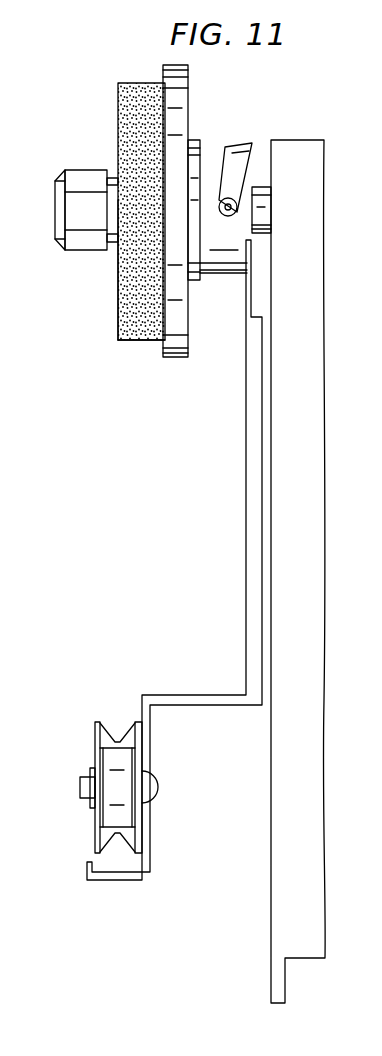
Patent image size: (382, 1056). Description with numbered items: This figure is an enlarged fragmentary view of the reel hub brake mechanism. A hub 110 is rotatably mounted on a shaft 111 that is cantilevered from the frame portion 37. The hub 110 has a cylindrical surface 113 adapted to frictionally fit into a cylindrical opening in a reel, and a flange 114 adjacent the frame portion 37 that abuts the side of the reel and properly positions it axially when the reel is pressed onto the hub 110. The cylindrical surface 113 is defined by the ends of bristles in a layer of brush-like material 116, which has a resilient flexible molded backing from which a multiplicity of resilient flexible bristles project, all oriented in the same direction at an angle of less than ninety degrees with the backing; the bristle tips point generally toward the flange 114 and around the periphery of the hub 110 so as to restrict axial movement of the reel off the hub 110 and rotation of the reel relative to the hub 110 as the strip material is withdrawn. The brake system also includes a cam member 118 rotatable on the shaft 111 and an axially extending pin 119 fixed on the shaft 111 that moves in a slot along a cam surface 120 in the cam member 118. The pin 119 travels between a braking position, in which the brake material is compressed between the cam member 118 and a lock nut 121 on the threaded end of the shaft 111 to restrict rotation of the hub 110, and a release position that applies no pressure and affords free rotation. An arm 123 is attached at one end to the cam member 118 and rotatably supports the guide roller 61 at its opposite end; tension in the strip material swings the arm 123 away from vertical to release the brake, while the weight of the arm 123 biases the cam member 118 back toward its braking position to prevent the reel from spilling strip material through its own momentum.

The hub 110 is at (117, 107).
The shaft 111 is at (268, 203).
The cylindrical surface 113 is at (140, 342).
The flange 114 is at (177, 358).
The brush-like material 116 is at (130, 282).
The cam member 118 is at (223, 279).
The pin 119 is at (228, 216).
The cam surface 120 is at (222, 151).
The lock nut 121 is at (88, 176).
The arm 123 is at (253, 503).
The frame portion 37 is at (308, 612).
The guide roller 61 is at (98, 747).